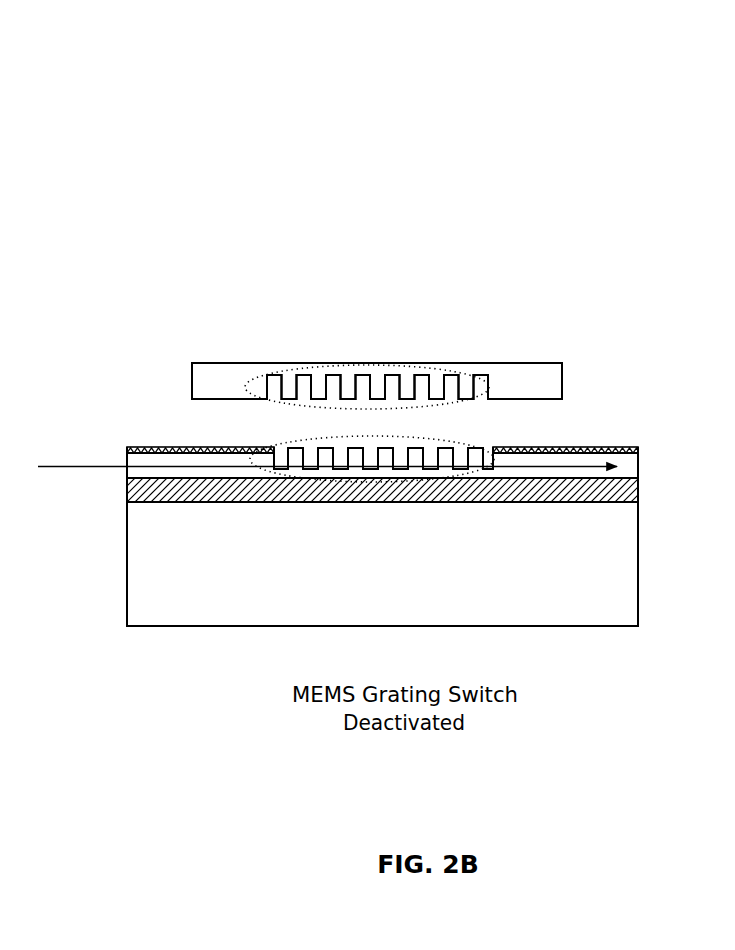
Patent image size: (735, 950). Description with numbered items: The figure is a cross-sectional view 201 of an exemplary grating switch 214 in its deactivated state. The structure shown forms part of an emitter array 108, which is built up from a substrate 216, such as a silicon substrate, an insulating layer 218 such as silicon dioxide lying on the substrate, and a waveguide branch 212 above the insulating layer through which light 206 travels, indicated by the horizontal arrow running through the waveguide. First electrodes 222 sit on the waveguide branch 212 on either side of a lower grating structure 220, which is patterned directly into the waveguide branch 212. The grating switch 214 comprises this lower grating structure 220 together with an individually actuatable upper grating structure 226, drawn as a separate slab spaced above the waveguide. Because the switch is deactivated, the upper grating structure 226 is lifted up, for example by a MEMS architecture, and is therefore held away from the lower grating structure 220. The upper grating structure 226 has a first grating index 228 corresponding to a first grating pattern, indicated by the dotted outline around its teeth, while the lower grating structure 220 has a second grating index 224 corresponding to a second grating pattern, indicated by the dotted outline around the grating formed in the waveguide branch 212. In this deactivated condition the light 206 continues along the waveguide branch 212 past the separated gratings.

The cross-sectional view 201 is at (113, 42).
The grating switch 214 is at (266, 192).
The upper grating structure 226 is at (373, 364).
The first grating index 228 is at (445, 368).
The first electrodes 222 is at (153, 447).
The lower grating structure 220 is at (383, 447).
The second grating index 224 is at (460, 442).
The light 206 is at (52, 466).
The waveguide branch 212 is at (639, 470).
The insulating layer 218 is at (639, 497).
The substrate 216 is at (639, 557).
The emitter array 108 is at (112, 549).